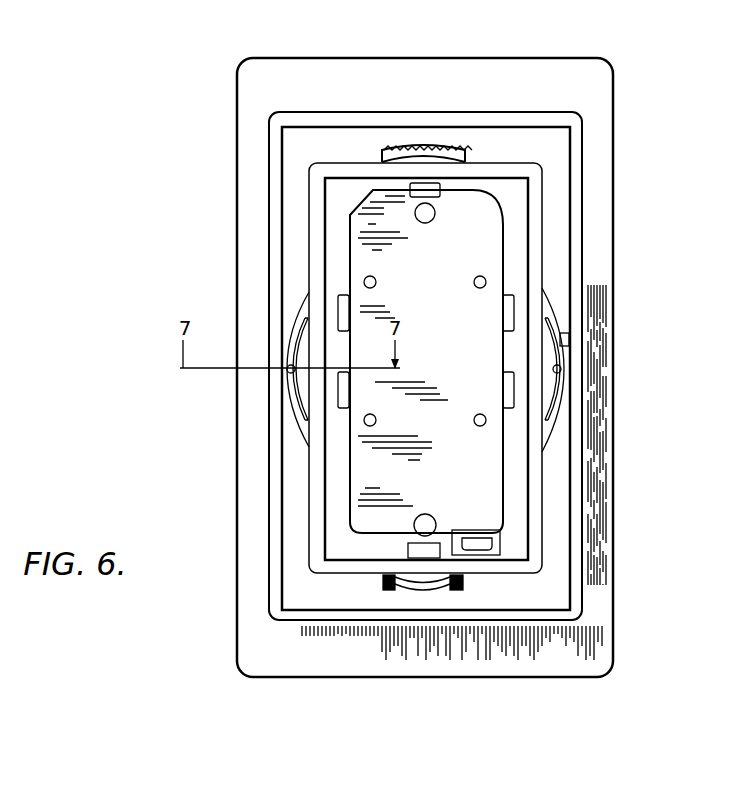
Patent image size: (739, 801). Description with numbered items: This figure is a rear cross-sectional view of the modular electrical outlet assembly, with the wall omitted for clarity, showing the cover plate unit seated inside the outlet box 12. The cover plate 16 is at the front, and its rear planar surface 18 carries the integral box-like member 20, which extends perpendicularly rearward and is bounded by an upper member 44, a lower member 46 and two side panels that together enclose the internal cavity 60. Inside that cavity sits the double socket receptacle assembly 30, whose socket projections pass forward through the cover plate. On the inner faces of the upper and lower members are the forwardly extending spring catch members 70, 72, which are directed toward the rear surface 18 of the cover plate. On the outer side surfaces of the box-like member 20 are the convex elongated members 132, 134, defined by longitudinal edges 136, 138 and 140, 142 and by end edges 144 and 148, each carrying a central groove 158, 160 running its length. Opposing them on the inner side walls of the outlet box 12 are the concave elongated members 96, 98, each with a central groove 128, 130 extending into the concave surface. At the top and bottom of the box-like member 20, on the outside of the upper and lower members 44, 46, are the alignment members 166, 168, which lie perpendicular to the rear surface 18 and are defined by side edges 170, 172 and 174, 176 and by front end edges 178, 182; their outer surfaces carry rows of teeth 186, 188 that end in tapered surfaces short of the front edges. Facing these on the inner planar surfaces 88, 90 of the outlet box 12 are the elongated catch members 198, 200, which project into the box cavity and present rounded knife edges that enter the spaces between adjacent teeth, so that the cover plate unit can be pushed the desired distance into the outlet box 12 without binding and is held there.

The outlet box 12 is at (273, 123).
The cover plate 16 is at (250, 681).
The rear planar surface 18 is at (268, 653).
The box-like member 20 is at (538, 512).
The double socket receptacle assembly 30 is at (478, 258).
The upper member 44 is at (521, 172).
The lower member 46 is at (512, 527).
The internal cavity 60 is at (520, 577).
The catch member 70 is at (437, 200).
The catch member 72 is at (399, 549).
The inner planar surface 88 is at (556, 130).
The inner planar surface 90 is at (305, 592).
The elongated member 96 is at (567, 340).
The elongated member 98 is at (291, 404).
The elongated groove 128 is at (557, 368).
The elongated groove 130 is at (290, 372).
The elongated member 132 is at (302, 328).
The elongated member 134 is at (553, 318).
The longitudinal edge 136 is at (292, 318).
The longitudinal edge 138 is at (302, 438).
The longitudinal edge 140 is at (545, 303).
The longitudinal edge 142 is at (546, 450).
The end edge 144 is at (293, 390).
The end edge 148 is at (549, 412).
The groove 158 is at (297, 348).
The groove 160 is at (558, 397).
The alignment member 166 is at (412, 150).
The alignment member 168 is at (441, 596).
The side edge 170 is at (385, 160).
The side edge 172 is at (518, 172).
The side edge 174 is at (385, 590).
The side edge 176 is at (460, 593).
The end edge 178 is at (432, 150).
The end edge 182 is at (415, 592).
The teeth 186 is at (445, 150).
The teeth 188 is at (400, 593).
The catch member 198 is at (397, 150).
The catch member 200 is at (408, 598).